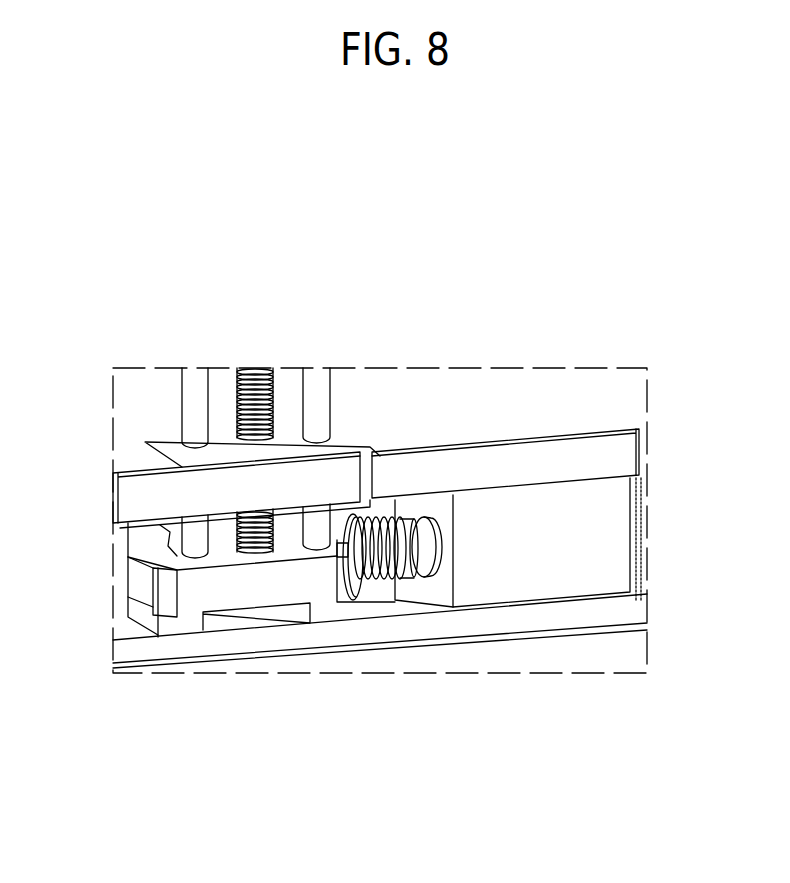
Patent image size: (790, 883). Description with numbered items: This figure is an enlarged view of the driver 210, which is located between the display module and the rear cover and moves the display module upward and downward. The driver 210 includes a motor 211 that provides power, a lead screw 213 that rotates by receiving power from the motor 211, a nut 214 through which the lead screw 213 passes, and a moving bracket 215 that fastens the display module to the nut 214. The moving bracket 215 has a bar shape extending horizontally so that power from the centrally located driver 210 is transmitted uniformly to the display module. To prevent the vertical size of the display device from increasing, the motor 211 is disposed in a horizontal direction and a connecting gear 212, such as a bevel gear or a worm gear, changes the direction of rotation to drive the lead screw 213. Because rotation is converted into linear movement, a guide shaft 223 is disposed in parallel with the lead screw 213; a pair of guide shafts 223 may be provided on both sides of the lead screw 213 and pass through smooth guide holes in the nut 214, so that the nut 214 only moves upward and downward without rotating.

The driver 210 is at (130, 438).
The motor 211 is at (543, 550).
The connecting gear 212 is at (325, 580).
The lead screw 213 is at (255, 382).
The nut 214 is at (345, 443).
The moving bracket 215 is at (413, 473).
The guide shaft 223 is at (193, 382).